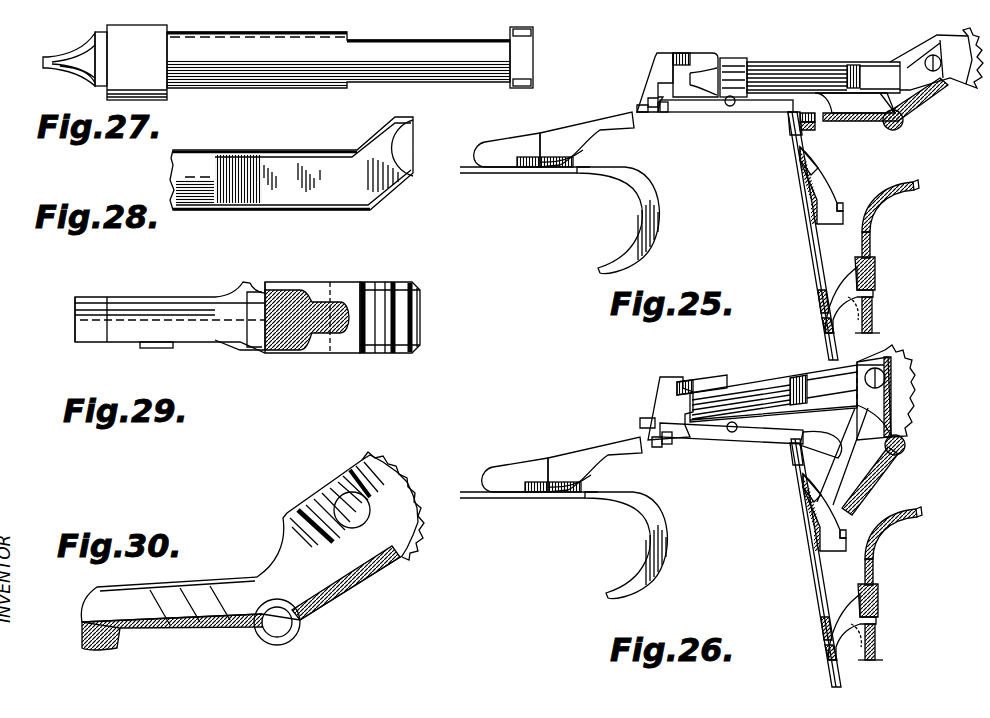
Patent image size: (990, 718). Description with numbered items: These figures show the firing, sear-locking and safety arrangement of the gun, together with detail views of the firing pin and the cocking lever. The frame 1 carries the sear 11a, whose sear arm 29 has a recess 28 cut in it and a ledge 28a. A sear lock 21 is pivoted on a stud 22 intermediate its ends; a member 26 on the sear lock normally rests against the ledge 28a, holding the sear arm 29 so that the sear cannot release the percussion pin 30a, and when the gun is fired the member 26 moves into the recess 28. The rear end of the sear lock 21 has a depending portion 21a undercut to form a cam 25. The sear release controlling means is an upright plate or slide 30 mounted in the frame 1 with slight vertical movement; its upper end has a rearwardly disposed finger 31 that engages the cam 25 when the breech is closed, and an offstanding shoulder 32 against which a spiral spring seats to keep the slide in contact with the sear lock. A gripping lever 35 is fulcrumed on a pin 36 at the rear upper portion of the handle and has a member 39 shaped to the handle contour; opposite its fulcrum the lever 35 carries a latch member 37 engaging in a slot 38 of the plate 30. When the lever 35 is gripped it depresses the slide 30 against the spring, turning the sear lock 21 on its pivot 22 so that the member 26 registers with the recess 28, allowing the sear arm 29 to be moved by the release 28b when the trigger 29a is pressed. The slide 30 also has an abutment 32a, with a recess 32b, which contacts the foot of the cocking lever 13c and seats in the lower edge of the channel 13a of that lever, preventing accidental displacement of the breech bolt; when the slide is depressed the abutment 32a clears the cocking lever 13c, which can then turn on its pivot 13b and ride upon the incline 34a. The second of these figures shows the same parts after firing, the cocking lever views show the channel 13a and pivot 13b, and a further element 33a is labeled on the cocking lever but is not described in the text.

In FIG. 25, the frame 1 is at (873, 331).
In FIG. 26, the frame 1 is at (880, 670).
In FIG. 25, the sear 11a is at (702, 58).
In FIG. 26, the sear 11a is at (705, 380).
In FIG. 29, the channel 13a is at (222, 327).
In FIG. 30, the channel 13a is at (223, 615).
In FIG. 25, the channel 13a is at (872, 115).
In FIG. 26, the channel 13a is at (875, 467).
In FIG. 25, the pivot 13b is at (903, 118).
In FIG. 26, the pivot 13b is at (907, 446).
In FIG. 29, the cocking lever 13c is at (318, 358).
In FIG. 30, the cocking lever 13c is at (338, 577).
In FIG. 25, the cocking lever 13c is at (935, 88).
In FIG. 26, the cocking lever 13c is at (903, 397).
In FIG. 25, the sear lock 21 is at (768, 103).
In FIG. 26, the sear lock 21 is at (767, 434).
In FIG. 25, the depending portion 21a is at (817, 120).
In FIG. 26, the depending portion 21a is at (838, 450).
In FIG. 25, the stud 22 is at (728, 106).
In FIG. 26, the stud 22 is at (731, 432).
In FIG. 25, the cam member 25 is at (803, 107).
In FIG. 26, the cam member 25 is at (812, 387).
In FIG. 25, the sear lock member 26 is at (663, 111).
In FIG. 26, the sear lock member 26 is at (668, 445).
In FIG. 25, the recess 28 is at (648, 100).
In FIG. 26, the recess 28 is at (640, 423).
In FIG. 25, the ledge 28a is at (645, 112).
In FIG. 26, the ledge 28a is at (657, 447).
In FIG. 25, the release 28b is at (608, 128).
In FIG. 26, the release 28b is at (592, 454).
In FIG. 25, the sear arm 29 is at (652, 82).
In FIG. 26, the sear arm 29 is at (660, 402).
In FIG. 25, the trigger 29a is at (620, 175).
In FIG. 26, the trigger 29a is at (625, 545).
In FIG. 25, the safety slide 30 is at (808, 247).
In FIG. 26, the safety slide 30 is at (806, 563).
In FIG. 27, the percussion pin 30a is at (260, 52).
In FIG. 25, the finger 31 is at (793, 111).
In FIG. 26, the finger 31 is at (793, 443).
In FIG. 25, the shoulder 32 is at (806, 207).
In FIG. 26, the shoulder 32 is at (801, 524).
In FIG. 25, the abutment 32a is at (838, 203).
In FIG. 26, the abutment 32a is at (794, 534).
In FIG. 25, the recess 32b is at (862, 212).
In FIG. 26, the recess 32b is at (886, 561).
In FIG. 29, the arm end 33a is at (75, 327).
In FIG. 30, the arm end 33a is at (97, 650).
In FIG. 25, the arm end 33a is at (810, 128).
In FIG. 25, the incline 34a is at (808, 190).
In FIG. 26, the incline 34a is at (784, 497).
In FIG. 25, the gripping lever 35 is at (876, 278).
In FIG. 26, the gripping lever 35 is at (875, 622).
In FIG. 25, the pin 36 is at (872, 310).
In FIG. 26, the pin 36 is at (884, 642).
In FIG. 25, the latch member 37 is at (823, 323).
In FIG. 26, the latch member 37 is at (808, 666).
In FIG. 25, the slot 38 is at (820, 310).
In FIG. 26, the slot 38 is at (806, 635).
In FIG. 25, the grip member 39 is at (916, 186).
In FIG. 26, the grip member 39 is at (901, 533).